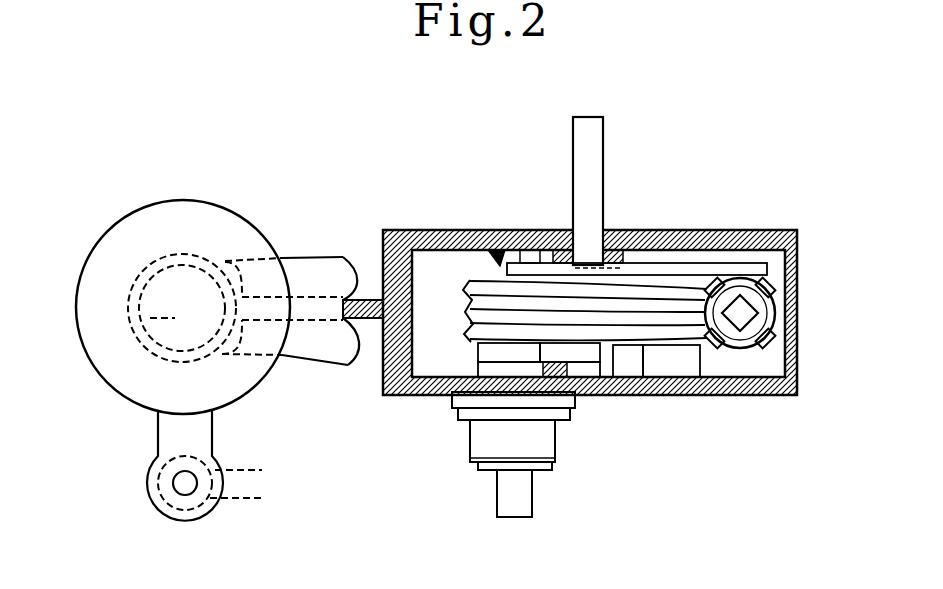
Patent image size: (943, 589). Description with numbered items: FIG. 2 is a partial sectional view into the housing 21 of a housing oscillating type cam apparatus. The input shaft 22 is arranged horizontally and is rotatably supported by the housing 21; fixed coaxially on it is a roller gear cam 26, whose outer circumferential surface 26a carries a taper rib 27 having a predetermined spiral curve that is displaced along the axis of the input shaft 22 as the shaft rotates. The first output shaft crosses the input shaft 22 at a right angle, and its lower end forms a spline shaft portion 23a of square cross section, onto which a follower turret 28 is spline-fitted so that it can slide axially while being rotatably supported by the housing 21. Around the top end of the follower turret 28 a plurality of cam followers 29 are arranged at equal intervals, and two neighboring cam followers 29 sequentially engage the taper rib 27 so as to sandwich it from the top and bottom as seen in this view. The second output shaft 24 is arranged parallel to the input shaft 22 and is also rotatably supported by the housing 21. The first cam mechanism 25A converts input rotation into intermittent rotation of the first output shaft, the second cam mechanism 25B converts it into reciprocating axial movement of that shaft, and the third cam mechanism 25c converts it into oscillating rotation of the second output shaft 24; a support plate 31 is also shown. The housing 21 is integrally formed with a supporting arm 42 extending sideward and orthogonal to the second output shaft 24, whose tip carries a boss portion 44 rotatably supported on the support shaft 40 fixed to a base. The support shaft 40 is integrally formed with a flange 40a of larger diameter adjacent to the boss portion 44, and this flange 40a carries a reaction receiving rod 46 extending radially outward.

The housing 21 is at (398, 231).
The input shaft 22 is at (595, 132).
The spline shaft portion 23a is at (760, 315).
The second output shaft 24 is at (500, 497).
The first cam mechanism 25A is at (740, 352).
The second cam mechanism 25B is at (490, 249).
The third cam mechanism 25c is at (468, 358).
The roller gear cam 26 is at (695, 345).
The outer circumferential surface 26a is at (637, 340).
The taper rib 27 is at (665, 318).
The follower turret 28 is at (763, 311).
The cam followers 29 is at (772, 343).
The support plate 31 is at (703, 268).
The support shaft 40 is at (135, 332).
The flange 40a is at (132, 377).
The supporting arm 42 is at (307, 287).
The boss portion 44 is at (189, 253).
The reaction receiving rod 46 is at (200, 435).